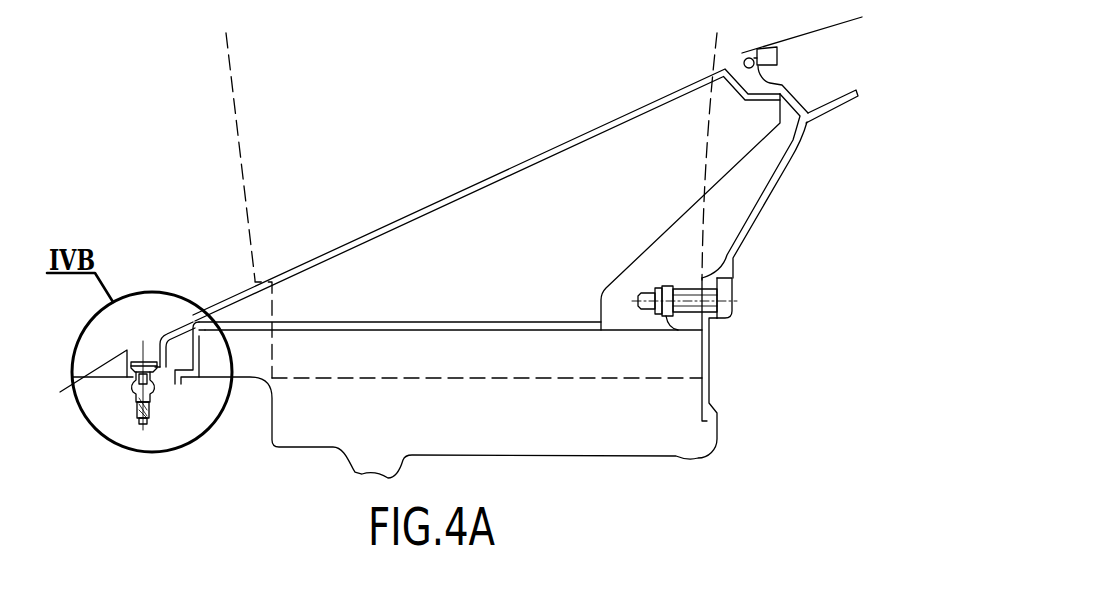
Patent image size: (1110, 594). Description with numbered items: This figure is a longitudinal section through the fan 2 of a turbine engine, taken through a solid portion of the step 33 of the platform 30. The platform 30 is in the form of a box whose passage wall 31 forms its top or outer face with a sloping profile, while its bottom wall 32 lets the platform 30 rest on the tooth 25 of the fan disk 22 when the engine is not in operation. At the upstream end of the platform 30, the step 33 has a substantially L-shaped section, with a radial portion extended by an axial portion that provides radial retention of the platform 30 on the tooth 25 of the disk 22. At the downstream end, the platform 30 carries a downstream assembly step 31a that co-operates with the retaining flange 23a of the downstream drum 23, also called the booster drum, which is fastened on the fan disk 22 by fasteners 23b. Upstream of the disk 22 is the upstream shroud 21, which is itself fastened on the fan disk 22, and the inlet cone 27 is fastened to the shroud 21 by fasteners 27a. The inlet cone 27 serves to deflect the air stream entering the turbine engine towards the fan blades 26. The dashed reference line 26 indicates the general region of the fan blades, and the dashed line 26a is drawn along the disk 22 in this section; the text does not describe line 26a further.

The fan 2 is at (180, 221).
The upstream shroud 21 is at (187, 328).
The fan disk 22 is at (615, 443).
The downstream drum 23 is at (797, 99).
The retaining flange 23a is at (748, 57).
The fasteners 23b is at (730, 289).
The tooth 25 is at (433, 330).
The fan blades 26 is at (229, 110).
The reference line 26a is at (605, 377).
The inlet cone 27 is at (105, 366).
The fasteners 27a is at (122, 416).
The platform 30 is at (425, 199).
The passage wall 31 is at (547, 152).
The downstream assembly step 31a is at (760, 101).
The bottom wall 32 is at (533, 320).
The step 33 is at (198, 396).